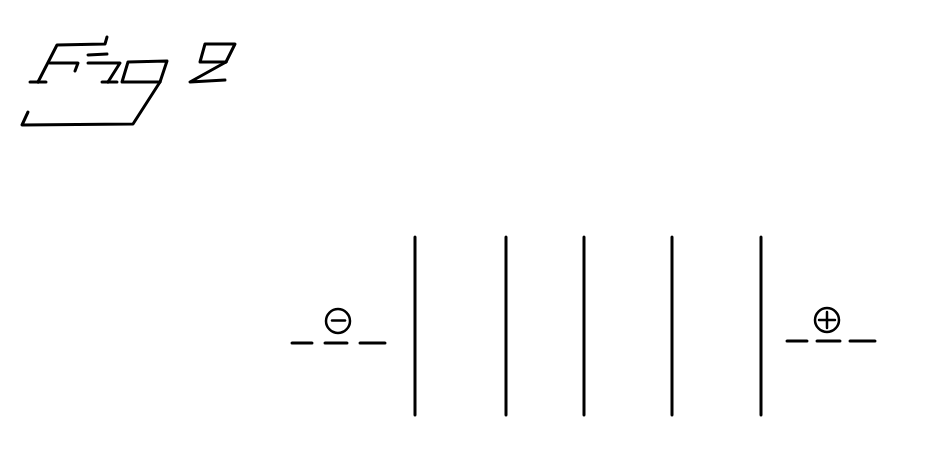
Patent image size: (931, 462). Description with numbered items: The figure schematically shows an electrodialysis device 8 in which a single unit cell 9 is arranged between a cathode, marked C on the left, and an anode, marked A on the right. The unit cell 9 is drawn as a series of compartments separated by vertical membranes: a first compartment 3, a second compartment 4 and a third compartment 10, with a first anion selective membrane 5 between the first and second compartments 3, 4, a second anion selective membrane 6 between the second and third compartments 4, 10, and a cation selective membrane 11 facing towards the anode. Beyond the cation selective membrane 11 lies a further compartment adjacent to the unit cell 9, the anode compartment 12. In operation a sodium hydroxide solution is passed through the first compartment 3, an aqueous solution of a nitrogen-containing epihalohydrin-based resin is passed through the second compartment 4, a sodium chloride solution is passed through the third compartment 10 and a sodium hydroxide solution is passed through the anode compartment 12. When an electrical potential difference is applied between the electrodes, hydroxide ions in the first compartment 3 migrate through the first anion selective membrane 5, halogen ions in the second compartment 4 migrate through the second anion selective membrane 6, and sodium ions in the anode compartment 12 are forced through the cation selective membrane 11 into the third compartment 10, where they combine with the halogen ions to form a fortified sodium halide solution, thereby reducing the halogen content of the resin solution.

The first compartment 3 is at (443, 290).
The second compartment 4 is at (553, 290).
The first anion selective membrane 5 is at (503, 309).
The second anion selective membrane 6 is at (583, 309).
The electrodialysis device 8 is at (235, 151).
The unit cell 9 is at (672, 195).
The third compartment 10 is at (607, 290).
The cation selective membrane 11 is at (668, 309).
The anode compartment 12 is at (696, 290).